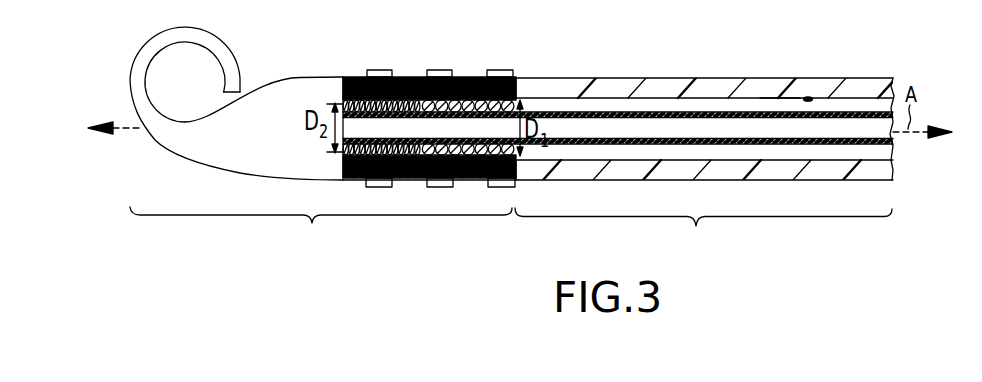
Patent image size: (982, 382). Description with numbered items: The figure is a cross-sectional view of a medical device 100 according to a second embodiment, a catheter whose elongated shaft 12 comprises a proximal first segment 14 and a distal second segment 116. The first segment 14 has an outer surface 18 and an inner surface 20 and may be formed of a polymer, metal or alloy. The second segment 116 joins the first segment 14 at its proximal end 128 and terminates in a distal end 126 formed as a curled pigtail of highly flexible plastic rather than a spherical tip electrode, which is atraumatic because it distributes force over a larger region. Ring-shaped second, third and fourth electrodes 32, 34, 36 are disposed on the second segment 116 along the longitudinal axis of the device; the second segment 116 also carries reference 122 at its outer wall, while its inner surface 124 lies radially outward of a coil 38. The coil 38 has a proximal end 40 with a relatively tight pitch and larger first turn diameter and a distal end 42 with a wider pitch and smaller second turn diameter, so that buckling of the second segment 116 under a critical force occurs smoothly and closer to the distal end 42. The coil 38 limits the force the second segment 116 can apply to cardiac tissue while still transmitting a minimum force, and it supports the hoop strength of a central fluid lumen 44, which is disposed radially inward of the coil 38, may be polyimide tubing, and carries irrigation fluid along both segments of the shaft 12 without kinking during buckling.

The medical device 100 is at (882, 60).
The elongated shaft 12 is at (682, 78).
The first segment 14 is at (618, 169).
The outer surface 18 is at (768, 97).
The inner surface 20 is at (808, 98).
The second electrode 32 is at (400, 77).
The third electrode 34 is at (453, 74).
The fourth electrode 36 is at (505, 76).
The coil 38 is at (415, 149).
The proximal end 40 is at (520, 97).
The distal end 42 is at (350, 100).
The fluid lumen 44 is at (745, 112).
The second segment 116 is at (321, 143).
The marker band 122 is at (402, 76).
The inner surface 124 is at (360, 100).
The distal end 126 is at (238, 74).
The proximal end 128 is at (520, 96).